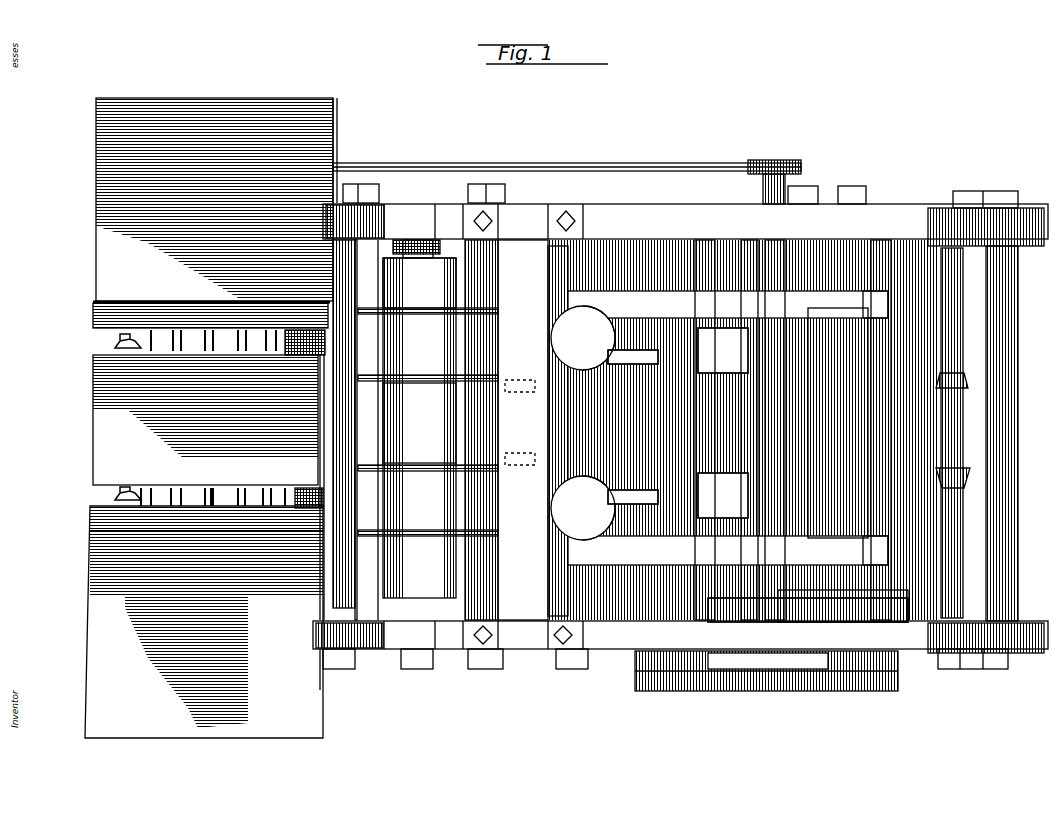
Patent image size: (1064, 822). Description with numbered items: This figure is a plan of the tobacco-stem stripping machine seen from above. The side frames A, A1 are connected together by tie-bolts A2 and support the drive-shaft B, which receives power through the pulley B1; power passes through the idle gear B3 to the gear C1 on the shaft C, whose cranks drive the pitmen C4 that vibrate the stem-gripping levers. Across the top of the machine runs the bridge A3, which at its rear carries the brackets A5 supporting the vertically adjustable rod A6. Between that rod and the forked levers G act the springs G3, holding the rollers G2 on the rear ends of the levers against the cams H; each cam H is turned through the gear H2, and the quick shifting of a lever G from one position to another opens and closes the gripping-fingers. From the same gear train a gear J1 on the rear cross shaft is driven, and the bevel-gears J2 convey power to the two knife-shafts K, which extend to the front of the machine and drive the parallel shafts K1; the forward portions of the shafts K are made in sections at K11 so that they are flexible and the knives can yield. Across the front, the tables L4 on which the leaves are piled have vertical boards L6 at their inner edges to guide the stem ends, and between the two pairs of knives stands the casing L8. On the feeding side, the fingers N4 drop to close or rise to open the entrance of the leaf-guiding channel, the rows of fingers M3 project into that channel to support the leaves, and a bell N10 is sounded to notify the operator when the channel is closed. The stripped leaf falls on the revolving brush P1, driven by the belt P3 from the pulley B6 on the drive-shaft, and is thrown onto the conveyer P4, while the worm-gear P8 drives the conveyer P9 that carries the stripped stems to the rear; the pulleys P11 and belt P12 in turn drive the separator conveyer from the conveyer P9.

The tables L4 is at (90, 582).
The casing L8 is at (205, 420).
The vertical boards L6 is at (330, 122).
The fingers M3 is at (197, 480).
The fingers N4 is at (258, 480).
The bell N10 is at (107, 488).
The conveyer P4 is at (292, 321).
The revolving brush P1 is at (290, 501).
The belt P3 is at (605, 155).
The worm-gear P8 is at (470, 172).
The pulleys P11 is at (432, 172).
The belt P12 is at (370, 172).
The conveyer P9 is at (364, 430).
The pulley B6 is at (780, 152).
The side frame A is at (707, 200).
The side frame A1 is at (680, 655).
The tie-bolts A2 is at (1010, 420).
The bridge A3 is at (523, 430).
The brackets A5 is at (537, 431).
The rod A6 is at (743, 430).
The shafts K is at (428, 430).
The shafts K1 is at (419, 423).
The sectional shaft portions K11 is at (376, 288).
The cam H is at (863, 430).
The gear H2 is at (634, 443).
The forked lever G is at (719, 428).
The roller G2 is at (867, 428).
The springs G3 is at (525, 516).
The shaft C is at (721, 430).
The gear C1 is at (742, 606).
The pitmen C4 is at (638, 427).
The drive-shaft B is at (770, 430).
The pulley B1 is at (820, 684).
The idle gear B3 is at (800, 606).
The bevel-gears J2 is at (955, 362).
The gear J1 is at (942, 612).